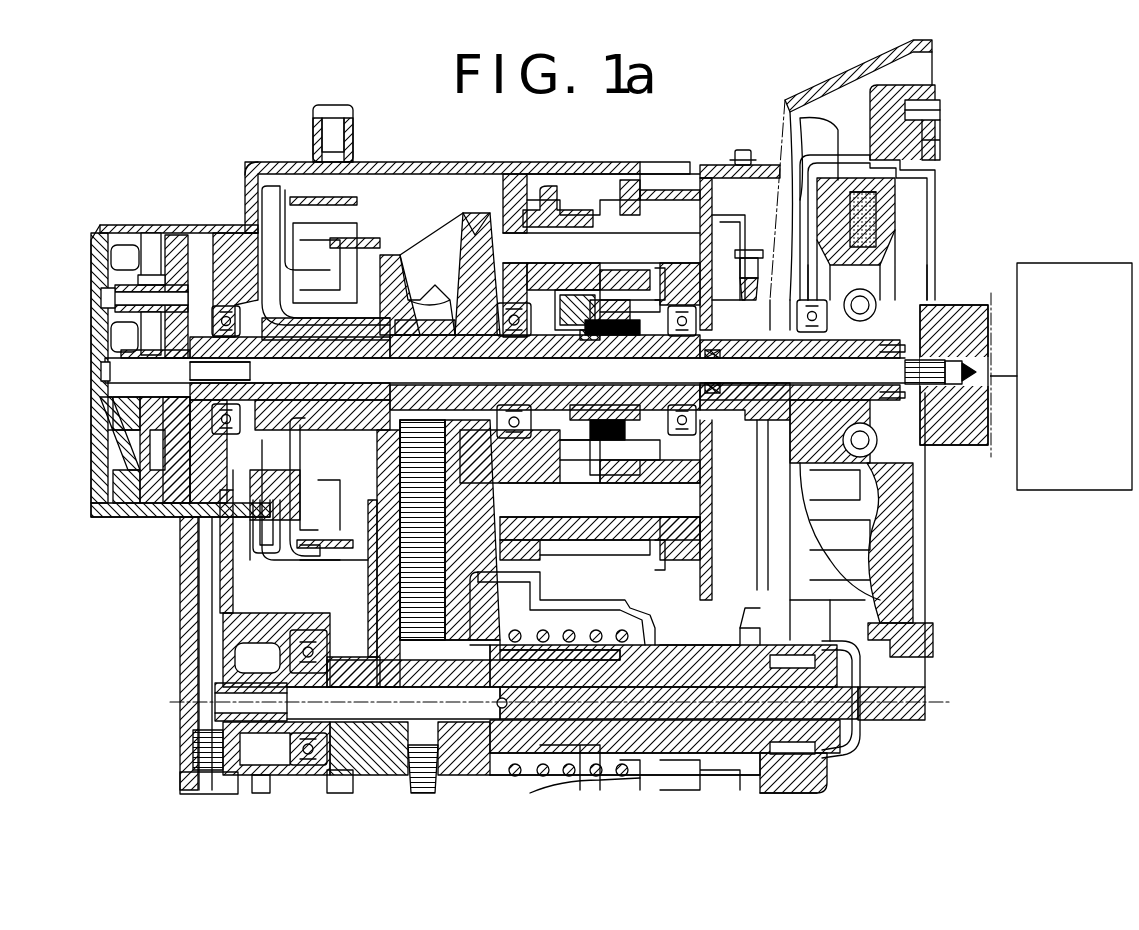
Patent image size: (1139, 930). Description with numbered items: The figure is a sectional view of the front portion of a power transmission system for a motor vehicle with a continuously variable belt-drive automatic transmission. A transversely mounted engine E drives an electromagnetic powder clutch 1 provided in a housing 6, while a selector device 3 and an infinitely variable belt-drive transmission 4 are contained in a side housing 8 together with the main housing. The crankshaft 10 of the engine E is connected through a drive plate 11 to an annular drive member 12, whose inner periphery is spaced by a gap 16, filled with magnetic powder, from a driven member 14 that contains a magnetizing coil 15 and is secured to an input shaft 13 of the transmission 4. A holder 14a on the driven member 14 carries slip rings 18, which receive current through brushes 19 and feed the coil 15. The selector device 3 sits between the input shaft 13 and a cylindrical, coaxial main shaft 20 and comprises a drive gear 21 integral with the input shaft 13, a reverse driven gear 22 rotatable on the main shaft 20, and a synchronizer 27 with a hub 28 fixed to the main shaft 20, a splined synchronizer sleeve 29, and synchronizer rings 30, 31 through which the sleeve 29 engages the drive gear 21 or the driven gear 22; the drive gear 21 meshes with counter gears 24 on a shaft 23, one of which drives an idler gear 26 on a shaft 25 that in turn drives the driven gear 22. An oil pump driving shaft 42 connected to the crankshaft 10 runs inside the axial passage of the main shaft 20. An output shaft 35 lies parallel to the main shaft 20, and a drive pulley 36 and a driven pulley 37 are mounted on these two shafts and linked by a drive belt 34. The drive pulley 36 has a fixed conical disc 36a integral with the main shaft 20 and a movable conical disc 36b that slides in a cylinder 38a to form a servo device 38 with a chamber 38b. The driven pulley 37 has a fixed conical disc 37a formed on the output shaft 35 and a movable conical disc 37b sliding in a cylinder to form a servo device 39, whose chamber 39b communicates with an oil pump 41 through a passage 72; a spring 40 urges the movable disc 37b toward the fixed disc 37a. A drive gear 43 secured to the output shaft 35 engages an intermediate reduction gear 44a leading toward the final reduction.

The electromagnetic powder clutch 1 is at (1012, 196).
The engine E is at (1078, 263).
The selector device 3 is at (608, 200).
The infinitely variable belt-drive transmission 4 is at (438, 188).
The housing 6 is at (788, 98).
The side housing 8 is at (214, 243).
The crankshaft 10 is at (966, 448).
The drive plate 11 is at (930, 292).
The annular drive member 12 is at (925, 120).
The input shaft 13 is at (822, 452).
The driven member 14 is at (895, 215).
The holder 14a is at (734, 247).
The magnetizing coil 15 is at (905, 222).
The gap 16 is at (900, 178).
The slip rings 18 is at (762, 410).
The brushes 19 is at (750, 242).
The main shaft 20 is at (526, 360).
The drive gear 21 is at (668, 285).
The reverse driven gear 22 is at (580, 455).
The shaft 23 is at (683, 545).
The counter gears 24 is at (575, 545).
The shaft 25 is at (660, 252).
The idler gear 26 is at (548, 200).
The synchronizer 27 is at (598, 445).
The hub 28 is at (598, 360).
The synchronizer sleeve 29 is at (605, 298).
The synchronizer ring 30 is at (625, 320).
The synchronizer ring 31 is at (535, 300).
The drive belt 34 is at (430, 537).
The output shaft 35 is at (678, 688).
The drive pulley 36 is at (438, 268).
The fixed conical disc 36a is at (457, 250).
The movable conical disc 36b is at (442, 292).
The driven pulley 37 is at (358, 582).
The fixed conical disc 37a is at (380, 600).
The movable conical disc 37b is at (440, 782).
The servo device 38 is at (300, 188).
The cylinder 38a is at (345, 205).
The chamber 38b is at (332, 297).
The servo device 39 is at (638, 626).
The chamber 39b is at (508, 626).
The spring 40 is at (600, 640).
The oil pump 41 is at (155, 245).
The oil pump driving shaft 42 is at (133, 372).
The drive gear 43 is at (738, 632).
The intermediate reduction gear 44a is at (740, 795).
The passage 72 is at (205, 640).